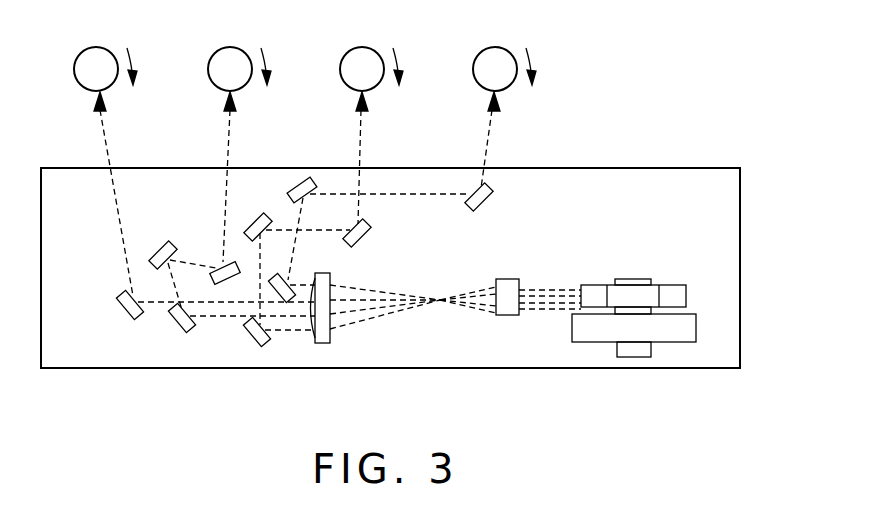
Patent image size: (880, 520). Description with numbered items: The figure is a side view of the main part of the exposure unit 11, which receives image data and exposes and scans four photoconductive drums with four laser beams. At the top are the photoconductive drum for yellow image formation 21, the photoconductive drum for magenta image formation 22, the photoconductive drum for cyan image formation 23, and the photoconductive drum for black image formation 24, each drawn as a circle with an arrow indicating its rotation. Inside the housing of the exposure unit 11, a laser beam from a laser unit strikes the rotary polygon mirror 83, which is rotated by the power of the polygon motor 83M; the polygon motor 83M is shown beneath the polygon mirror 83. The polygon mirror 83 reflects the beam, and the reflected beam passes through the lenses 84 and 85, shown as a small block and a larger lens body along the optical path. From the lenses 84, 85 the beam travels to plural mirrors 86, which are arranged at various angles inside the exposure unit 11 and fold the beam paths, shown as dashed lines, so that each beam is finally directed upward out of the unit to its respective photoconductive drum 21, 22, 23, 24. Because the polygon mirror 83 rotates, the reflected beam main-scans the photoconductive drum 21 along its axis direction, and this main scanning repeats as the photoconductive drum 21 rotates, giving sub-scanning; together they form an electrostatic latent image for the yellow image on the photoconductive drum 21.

The exposure unit 11 is at (612, 168).
The photoconductive drum for yellow image formation 21 is at (97, 47).
The photoconductive drum for magenta image formation 22 is at (233, 47).
The photoconductive drum for cyan image formation 23 is at (364, 47).
The photoconductive drum for black image formation 24 is at (499, 47).
The rotary polygon mirror 83 is at (667, 285).
The polygon motor 83M is at (696, 328).
The lens 84 is at (506, 279).
The lens 85 is at (332, 340).
The mirrors 86 is at (163, 243).